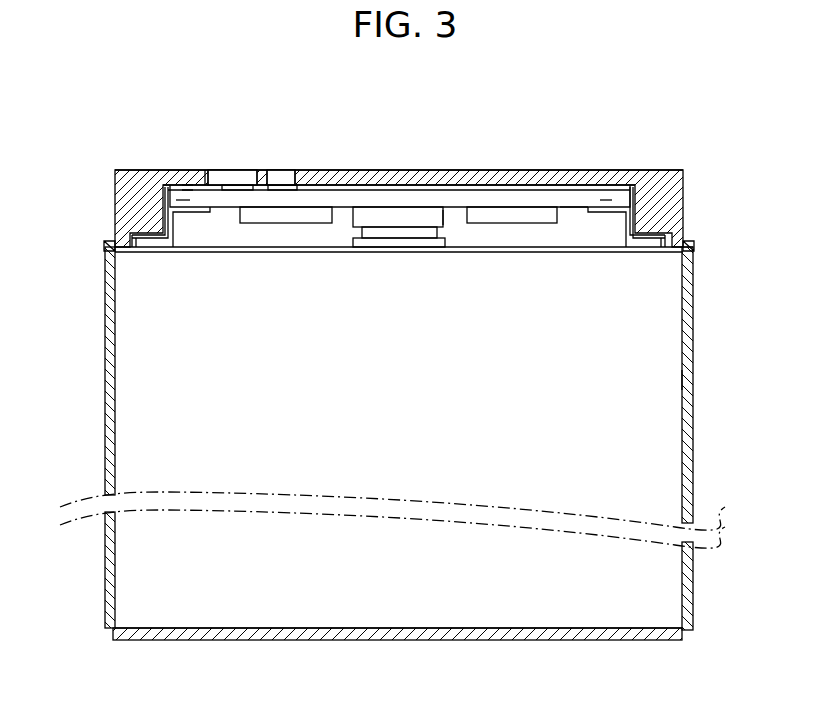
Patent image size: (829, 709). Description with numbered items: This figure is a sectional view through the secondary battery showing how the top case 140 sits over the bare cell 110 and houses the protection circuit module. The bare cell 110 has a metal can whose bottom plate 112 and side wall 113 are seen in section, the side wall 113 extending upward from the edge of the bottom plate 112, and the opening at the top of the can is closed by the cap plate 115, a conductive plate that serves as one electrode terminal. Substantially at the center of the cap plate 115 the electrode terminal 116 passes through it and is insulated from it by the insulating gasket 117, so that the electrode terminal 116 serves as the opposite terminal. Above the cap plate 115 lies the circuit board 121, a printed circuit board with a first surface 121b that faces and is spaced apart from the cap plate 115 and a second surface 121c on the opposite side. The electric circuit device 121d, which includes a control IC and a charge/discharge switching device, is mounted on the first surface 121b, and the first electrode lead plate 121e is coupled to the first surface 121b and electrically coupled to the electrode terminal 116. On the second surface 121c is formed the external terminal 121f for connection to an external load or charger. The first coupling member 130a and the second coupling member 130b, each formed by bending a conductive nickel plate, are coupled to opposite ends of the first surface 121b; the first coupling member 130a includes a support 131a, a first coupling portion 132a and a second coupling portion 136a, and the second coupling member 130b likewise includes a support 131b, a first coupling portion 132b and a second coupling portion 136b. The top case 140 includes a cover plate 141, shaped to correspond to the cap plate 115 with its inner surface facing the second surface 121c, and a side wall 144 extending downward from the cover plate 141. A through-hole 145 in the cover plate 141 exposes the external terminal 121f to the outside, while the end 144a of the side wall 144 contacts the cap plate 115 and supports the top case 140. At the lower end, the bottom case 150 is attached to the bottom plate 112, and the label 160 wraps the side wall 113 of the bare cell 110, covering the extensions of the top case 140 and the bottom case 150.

The top case 140 is at (110, 168).
The cover plate 141 is at (426, 176).
The through-hole 145 is at (246, 178).
The external terminal 121f is at (296, 178).
The second surface 121c is at (363, 197).
The circuit board 121 is at (466, 199).
The support 131b is at (166, 212).
The first coupling portion 132b is at (134, 243).
The support 131a is at (632, 220).
The first coupling portion 132a is at (667, 240).
The second coupling portion 136b is at (207, 212).
The second coupling portion 136a is at (618, 205).
The second coupling member 130b is at (181, 229).
The first coupling member 130a is at (617, 229).
The electric circuit device 121d is at (274, 224).
The electrode terminal 116 is at (393, 232).
The insulating gasket 117 is at (363, 243).
The first electrode lead plate 121e is at (447, 218).
The first surface 121b is at (572, 210).
The side wall 144 is at (114, 176).
The end of the side wall 144a is at (111, 253).
The bare cell 110 is at (431, 471).
The side wall 113 is at (672, 430).
The bottom plate 112 is at (430, 641).
The bottom case 150 is at (372, 641).
The cap plate 115 is at (690, 250).
The label 160 is at (690, 380).